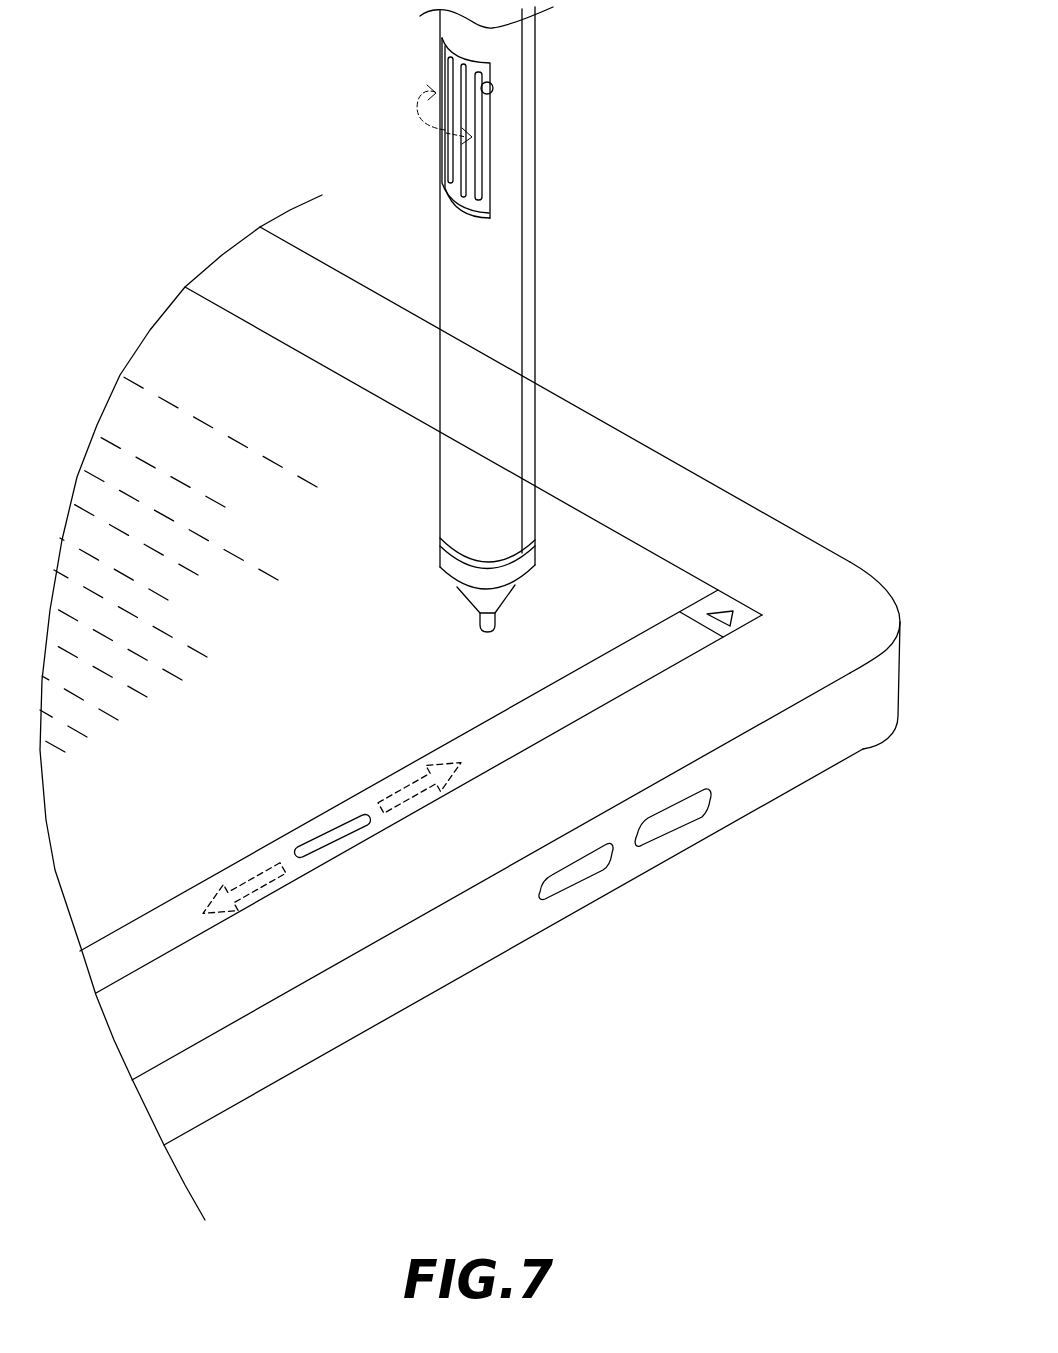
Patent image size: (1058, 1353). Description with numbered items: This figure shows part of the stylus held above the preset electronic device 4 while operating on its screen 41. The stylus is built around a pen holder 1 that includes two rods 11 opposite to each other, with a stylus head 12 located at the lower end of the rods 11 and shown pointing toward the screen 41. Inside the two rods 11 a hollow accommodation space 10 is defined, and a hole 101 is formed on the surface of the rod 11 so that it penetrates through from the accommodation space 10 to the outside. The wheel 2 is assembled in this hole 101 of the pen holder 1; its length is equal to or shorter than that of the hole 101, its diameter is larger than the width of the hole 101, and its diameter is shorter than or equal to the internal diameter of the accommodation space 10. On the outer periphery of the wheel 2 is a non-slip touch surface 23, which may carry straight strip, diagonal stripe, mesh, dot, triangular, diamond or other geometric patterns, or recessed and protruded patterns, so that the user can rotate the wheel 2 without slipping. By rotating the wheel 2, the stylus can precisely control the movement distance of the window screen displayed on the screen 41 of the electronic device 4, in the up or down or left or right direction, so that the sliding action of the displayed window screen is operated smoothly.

The pen holder 1 is at (592, 319).
The accommodation space 10 is at (583, 128).
The hole 101 is at (492, 93).
The rods 11 is at (505, 228).
The stylus head 12 is at (522, 565).
The wheel 2 is at (557, 128).
The touch surface 23 is at (472, 155).
The electronic device 4 is at (470, 707).
The screen 41 is at (265, 781).